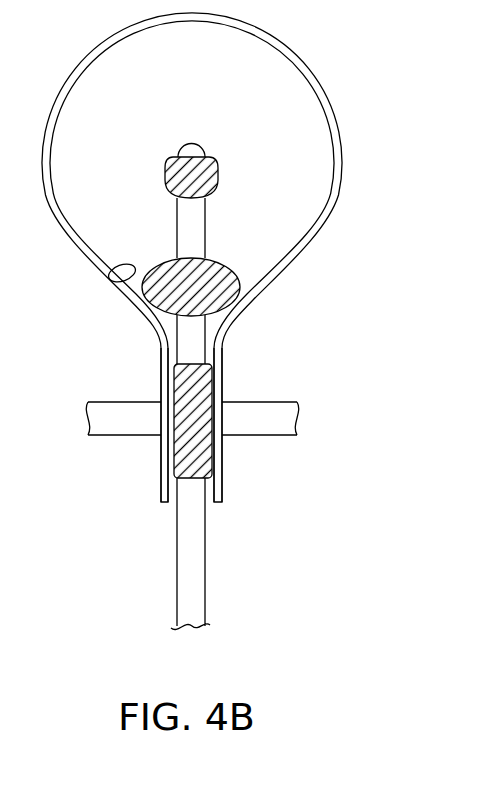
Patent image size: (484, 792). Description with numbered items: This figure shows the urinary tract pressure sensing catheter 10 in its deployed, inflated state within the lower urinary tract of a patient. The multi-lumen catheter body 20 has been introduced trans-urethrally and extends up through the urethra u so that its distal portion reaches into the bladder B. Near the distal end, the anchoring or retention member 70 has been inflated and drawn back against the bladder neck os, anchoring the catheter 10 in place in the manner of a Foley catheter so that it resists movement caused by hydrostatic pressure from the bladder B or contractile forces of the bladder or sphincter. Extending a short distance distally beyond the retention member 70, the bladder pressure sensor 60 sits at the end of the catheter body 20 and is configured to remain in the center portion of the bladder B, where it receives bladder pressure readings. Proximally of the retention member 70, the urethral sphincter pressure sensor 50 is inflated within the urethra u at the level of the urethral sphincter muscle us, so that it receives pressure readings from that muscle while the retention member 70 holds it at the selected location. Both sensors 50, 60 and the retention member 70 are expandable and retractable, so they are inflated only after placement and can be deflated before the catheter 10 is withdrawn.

The catheter 10 is at (208, 387).
The multi-lumen catheter body 20 is at (177, 562).
The urethral sphincter pressure sensor 50 is at (200, 455).
The bladder pressure sensor 60 is at (209, 177).
The anchoring or retention member 70 is at (218, 270).
The bladder B is at (200, 67).
The urethra u is at (158, 351).
The urethral sphincter muscle us is at (258, 410).
The bladder neck os is at (108, 279).